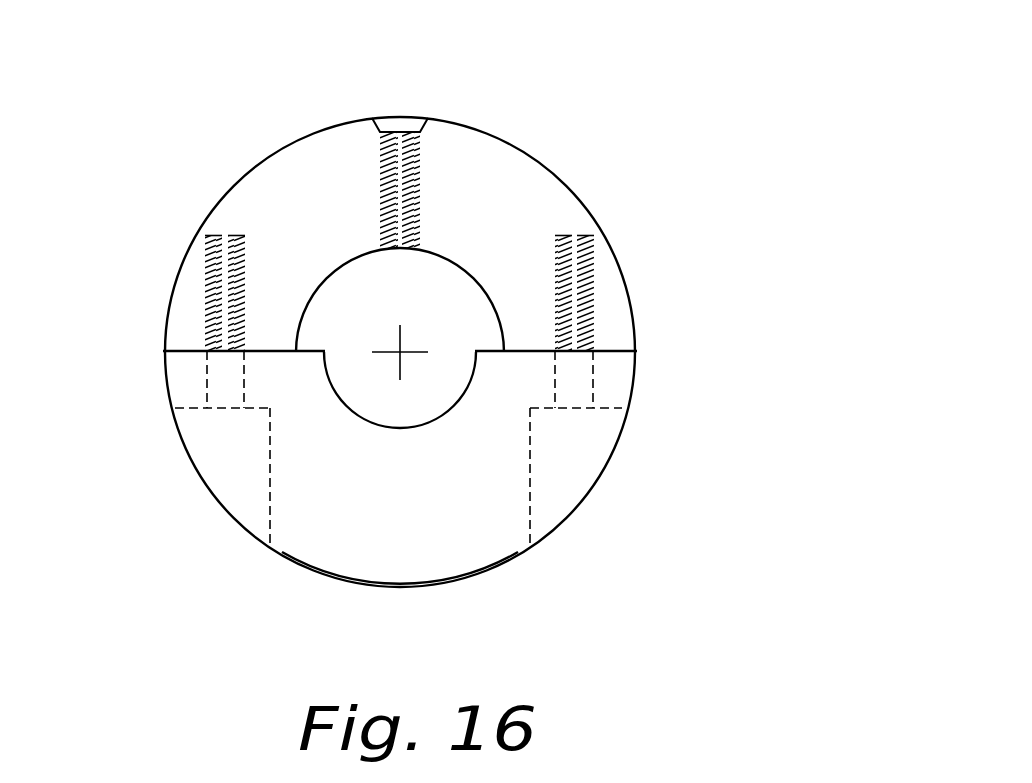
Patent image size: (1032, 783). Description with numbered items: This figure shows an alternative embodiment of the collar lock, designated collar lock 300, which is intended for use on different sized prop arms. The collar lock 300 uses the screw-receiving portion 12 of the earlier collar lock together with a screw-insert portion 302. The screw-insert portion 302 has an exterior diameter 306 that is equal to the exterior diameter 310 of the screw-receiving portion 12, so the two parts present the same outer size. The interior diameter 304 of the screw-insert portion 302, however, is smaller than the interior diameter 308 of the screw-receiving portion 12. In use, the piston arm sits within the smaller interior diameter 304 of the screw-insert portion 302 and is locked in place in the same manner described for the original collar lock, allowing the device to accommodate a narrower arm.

The collar lock 300 is at (490, 108).
The exterior diameter of the screw-receiving portion 310 is at (323, 165).
The interior diameter of the screw-insert portion 304 is at (478, 283).
The interior diameter of the screw-receiving portion 308 is at (337, 397).
The screw-receiving portion 12 is at (295, 210).
The screw-insert portion 302 is at (365, 527).
The exterior diameter of the screw-insert portion 306 is at (443, 587).